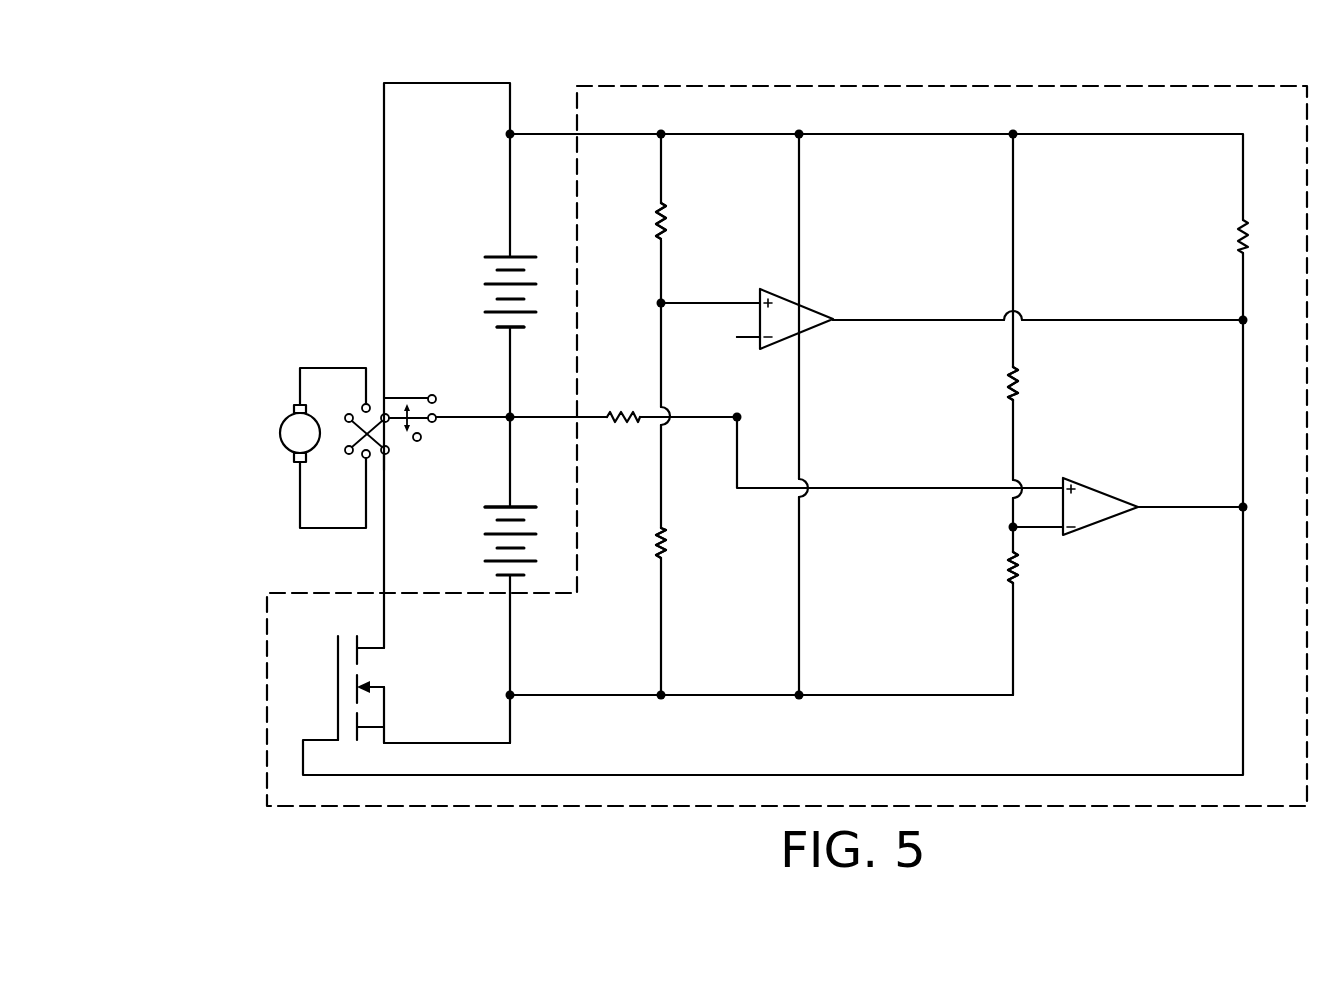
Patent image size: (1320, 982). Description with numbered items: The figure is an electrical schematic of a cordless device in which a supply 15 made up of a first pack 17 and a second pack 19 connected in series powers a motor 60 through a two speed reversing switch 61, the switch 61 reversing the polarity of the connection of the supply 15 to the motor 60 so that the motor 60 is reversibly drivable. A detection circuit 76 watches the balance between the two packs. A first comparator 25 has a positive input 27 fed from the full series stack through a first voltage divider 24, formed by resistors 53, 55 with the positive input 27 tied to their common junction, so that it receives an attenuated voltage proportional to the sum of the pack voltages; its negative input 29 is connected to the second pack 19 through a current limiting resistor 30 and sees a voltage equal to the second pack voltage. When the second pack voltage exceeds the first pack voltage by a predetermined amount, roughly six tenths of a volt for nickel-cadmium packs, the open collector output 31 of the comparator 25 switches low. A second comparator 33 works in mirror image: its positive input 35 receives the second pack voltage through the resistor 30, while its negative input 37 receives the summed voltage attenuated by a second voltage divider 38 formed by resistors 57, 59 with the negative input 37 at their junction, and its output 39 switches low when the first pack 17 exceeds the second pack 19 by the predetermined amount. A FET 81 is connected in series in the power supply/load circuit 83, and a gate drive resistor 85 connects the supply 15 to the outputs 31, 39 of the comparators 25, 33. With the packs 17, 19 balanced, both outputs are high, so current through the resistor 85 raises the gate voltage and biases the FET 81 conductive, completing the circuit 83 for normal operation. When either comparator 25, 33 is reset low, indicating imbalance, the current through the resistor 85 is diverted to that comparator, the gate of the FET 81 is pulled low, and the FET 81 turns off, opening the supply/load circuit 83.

The supply 15 is at (538, 328).
The first pack 17 is at (488, 293).
The second pack 19 is at (490, 533).
The first voltage divider 24 is at (650, 240).
The first comparator 25 is at (787, 296).
The positive input 27 is at (758, 301).
The negative input 29 is at (760, 337).
The current limiting resistor 30 is at (612, 412).
The open collector output 31 is at (832, 316).
The second comparator 33 is at (1066, 470).
The positive input 35 is at (1060, 486).
The negative input 37 is at (1061, 531).
The second voltage divider 38 is at (1001, 399).
The output 39 is at (1140, 506).
The resistor 53 is at (655, 218).
The resistor 55 is at (655, 548).
The resistor 57 is at (1007, 378).
The resistor 59 is at (1007, 567).
The motor 60 is at (280, 433).
The two speed reversing switch 61 is at (375, 362).
The detection circuit 76 is at (992, 86).
The FET 81 is at (375, 655).
The power supply/load circuit 83 is at (467, 746).
The gate drive resistor 85 is at (1247, 230).